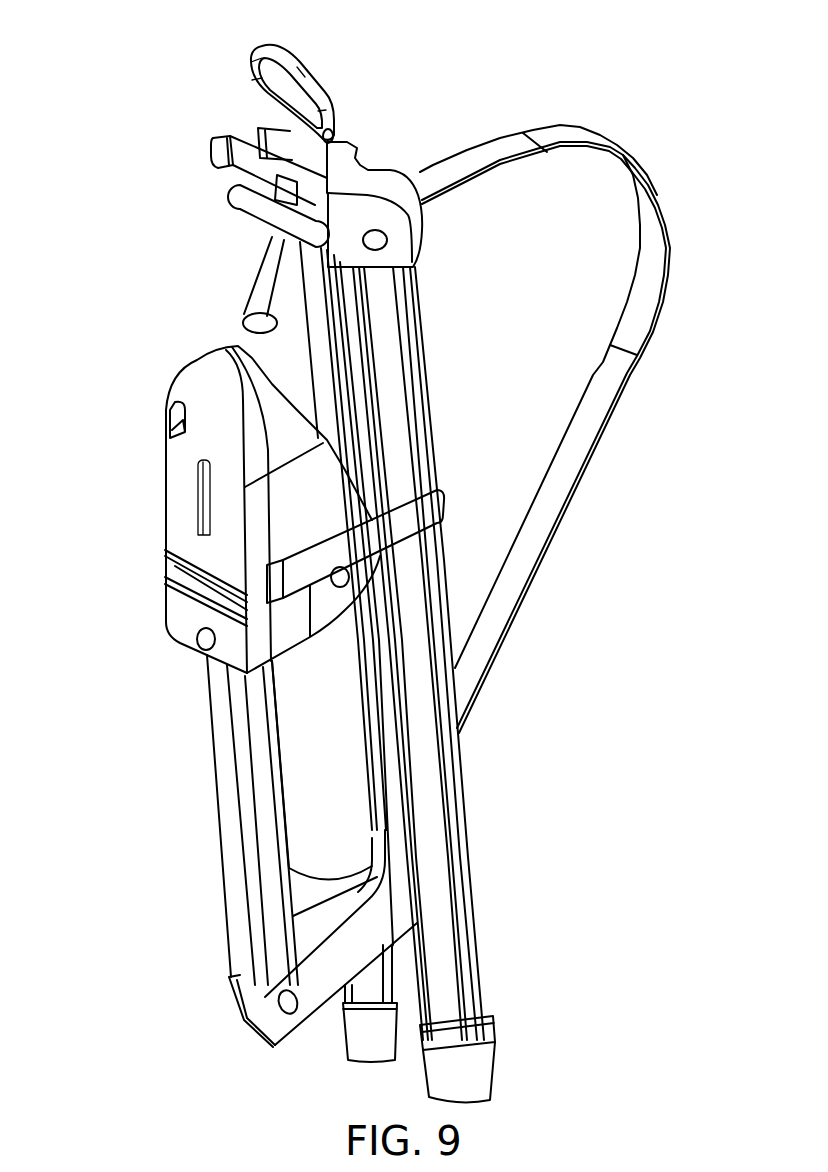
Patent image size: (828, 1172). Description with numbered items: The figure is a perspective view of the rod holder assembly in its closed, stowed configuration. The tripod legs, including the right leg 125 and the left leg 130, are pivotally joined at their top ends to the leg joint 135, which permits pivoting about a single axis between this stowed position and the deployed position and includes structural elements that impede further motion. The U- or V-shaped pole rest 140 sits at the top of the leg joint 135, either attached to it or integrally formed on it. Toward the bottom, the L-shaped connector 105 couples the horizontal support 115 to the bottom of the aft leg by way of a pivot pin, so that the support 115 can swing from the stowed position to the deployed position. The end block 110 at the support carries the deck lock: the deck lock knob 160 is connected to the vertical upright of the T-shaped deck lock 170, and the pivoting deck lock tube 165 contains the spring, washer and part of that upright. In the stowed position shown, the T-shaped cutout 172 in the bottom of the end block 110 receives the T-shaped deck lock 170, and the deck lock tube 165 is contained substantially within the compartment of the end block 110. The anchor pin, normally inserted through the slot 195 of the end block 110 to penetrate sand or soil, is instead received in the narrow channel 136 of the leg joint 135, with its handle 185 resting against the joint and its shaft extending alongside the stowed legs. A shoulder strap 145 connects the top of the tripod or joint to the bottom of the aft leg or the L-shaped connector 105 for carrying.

The L-shaped connector 105 is at (310, 990).
The end block 110 is at (175, 507).
The support 115 is at (235, 868).
The right leg 125 is at (455, 834).
The left leg 130 is at (334, 998).
The leg joint 135 is at (278, 140).
The narrow channel 136 is at (340, 130).
The pole rest 140 is at (210, 157).
The shoulder strap 145 is at (653, 248).
The deck lock knob 160 is at (250, 203).
The deck lock tube 165 is at (243, 312).
The T-shaped deck lock 170 is at (172, 568).
The T-shaped cutout 172 is at (187, 592).
The handle 185 is at (293, 55).
The slot 195 is at (168, 408).